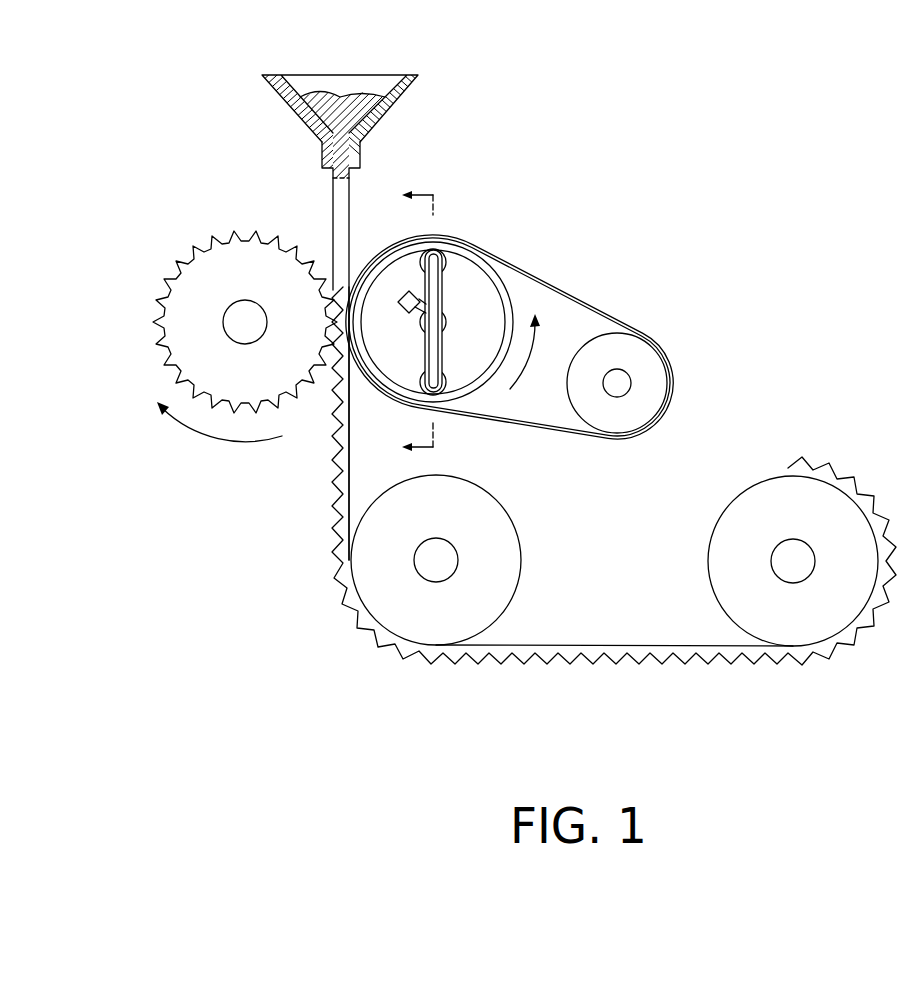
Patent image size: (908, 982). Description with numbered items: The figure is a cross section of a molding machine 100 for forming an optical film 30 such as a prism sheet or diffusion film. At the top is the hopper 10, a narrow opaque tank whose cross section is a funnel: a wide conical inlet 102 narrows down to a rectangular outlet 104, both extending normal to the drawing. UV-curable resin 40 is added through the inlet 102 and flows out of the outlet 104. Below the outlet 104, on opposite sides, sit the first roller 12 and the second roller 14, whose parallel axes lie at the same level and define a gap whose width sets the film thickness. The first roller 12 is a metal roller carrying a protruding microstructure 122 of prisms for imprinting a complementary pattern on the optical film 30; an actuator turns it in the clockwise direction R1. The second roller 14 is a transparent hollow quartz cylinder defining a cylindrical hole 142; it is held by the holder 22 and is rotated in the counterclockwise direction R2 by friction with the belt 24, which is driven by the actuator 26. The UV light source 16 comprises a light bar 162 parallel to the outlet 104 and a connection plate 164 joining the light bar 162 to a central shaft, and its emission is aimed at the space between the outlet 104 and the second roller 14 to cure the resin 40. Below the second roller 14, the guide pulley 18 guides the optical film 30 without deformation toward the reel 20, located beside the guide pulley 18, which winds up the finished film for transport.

The molding machine 100 is at (618, 69).
The hopper 10 is at (414, 88).
The conical inlet 102 is at (330, 96).
The outlet 104 is at (362, 158).
The UV-curable resin 40 is at (375, 96).
The first roller 12 is at (198, 345).
The microstructure 122 is at (160, 297).
The UV light source 16 is at (245, 148).
The light bar 162 is at (350, 315).
The connection plate 164 is at (338, 312).
The optical film 30 is at (601, 650).
The second roller 14 is at (476, 392).
The cylindrical hole 142 is at (466, 268).
The holder 22 is at (440, 299).
The belt 24 is at (572, 300).
The actuator 26 is at (641, 348).
The guide pulley 18 is at (487, 562).
The reel 20 is at (743, 545).
The clockwise direction R1 is at (219, 439).
The counterclockwise direction R2 is at (544, 350).